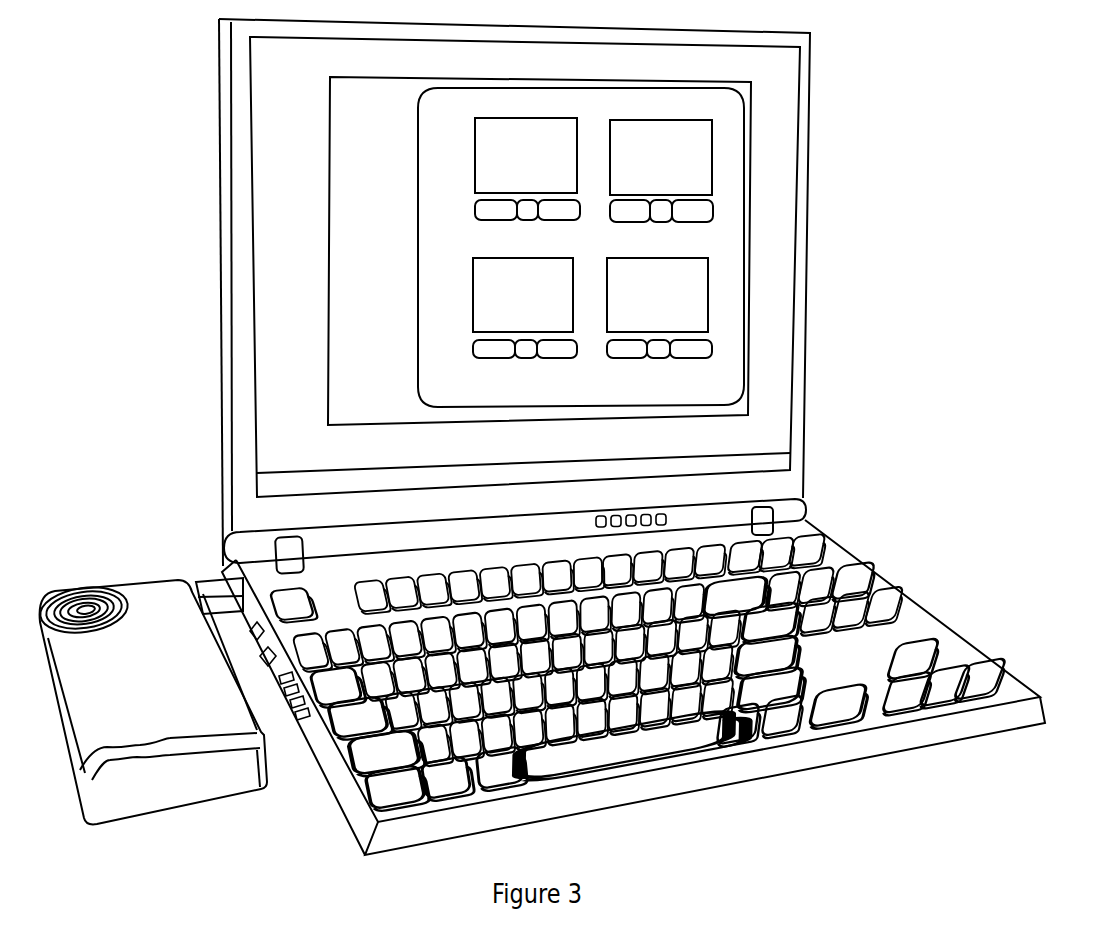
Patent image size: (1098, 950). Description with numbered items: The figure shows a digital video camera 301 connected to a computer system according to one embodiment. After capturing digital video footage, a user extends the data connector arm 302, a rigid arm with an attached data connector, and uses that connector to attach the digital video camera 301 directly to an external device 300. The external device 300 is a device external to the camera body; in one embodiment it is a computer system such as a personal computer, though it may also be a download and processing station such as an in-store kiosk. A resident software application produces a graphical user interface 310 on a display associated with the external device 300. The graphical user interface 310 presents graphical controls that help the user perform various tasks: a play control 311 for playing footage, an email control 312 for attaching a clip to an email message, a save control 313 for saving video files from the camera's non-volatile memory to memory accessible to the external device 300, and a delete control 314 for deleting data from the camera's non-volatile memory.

The external device 300 is at (640, 437).
The digital video camera 301 is at (152, 702).
The data connector arm 302 is at (205, 582).
The graphical user interface 310 is at (581, 247).
The play control 311 is at (527, 169).
The email control 312 is at (661, 171).
The save control 313 is at (525, 308).
The delete control 314 is at (659, 308).